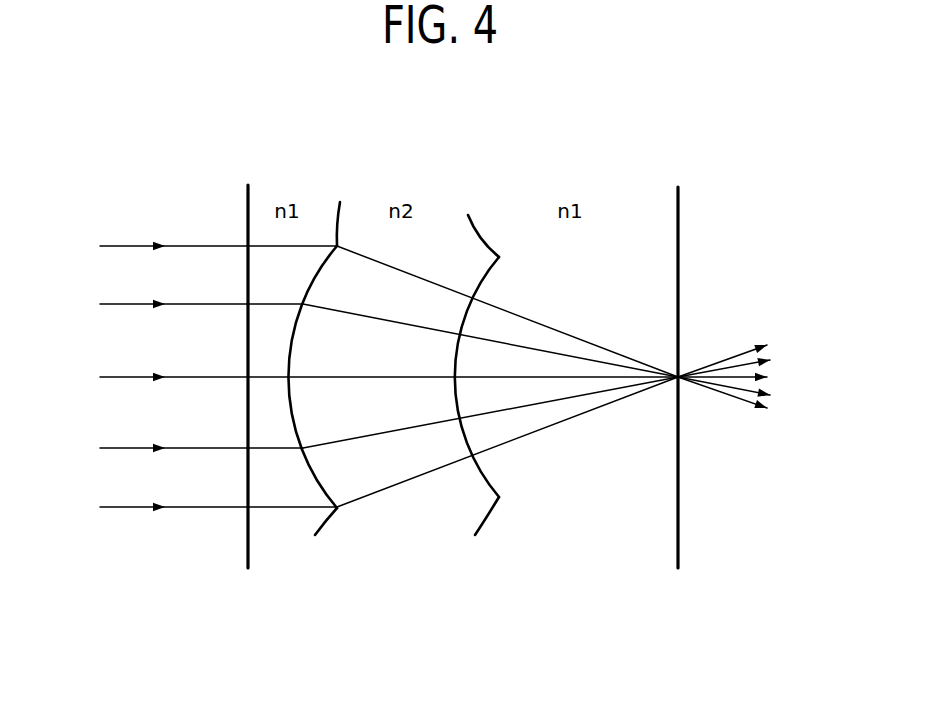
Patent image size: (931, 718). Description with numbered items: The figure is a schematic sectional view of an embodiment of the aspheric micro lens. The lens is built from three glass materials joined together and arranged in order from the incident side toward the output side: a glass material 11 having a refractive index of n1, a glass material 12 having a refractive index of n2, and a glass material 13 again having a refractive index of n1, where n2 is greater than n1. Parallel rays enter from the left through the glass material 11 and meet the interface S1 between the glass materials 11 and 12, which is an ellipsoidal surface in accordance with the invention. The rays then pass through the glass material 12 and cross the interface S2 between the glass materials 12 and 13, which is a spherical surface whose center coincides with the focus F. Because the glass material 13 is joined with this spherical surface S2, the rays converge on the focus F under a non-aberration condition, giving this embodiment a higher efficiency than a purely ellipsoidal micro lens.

The glass material 11 is at (273, 270).
The glass material 12 is at (393, 353).
The glass material 13 is at (610, 290).
The interface S1 is at (314, 386).
The interface S2 is at (477, 393).
The focus F is at (690, 356).